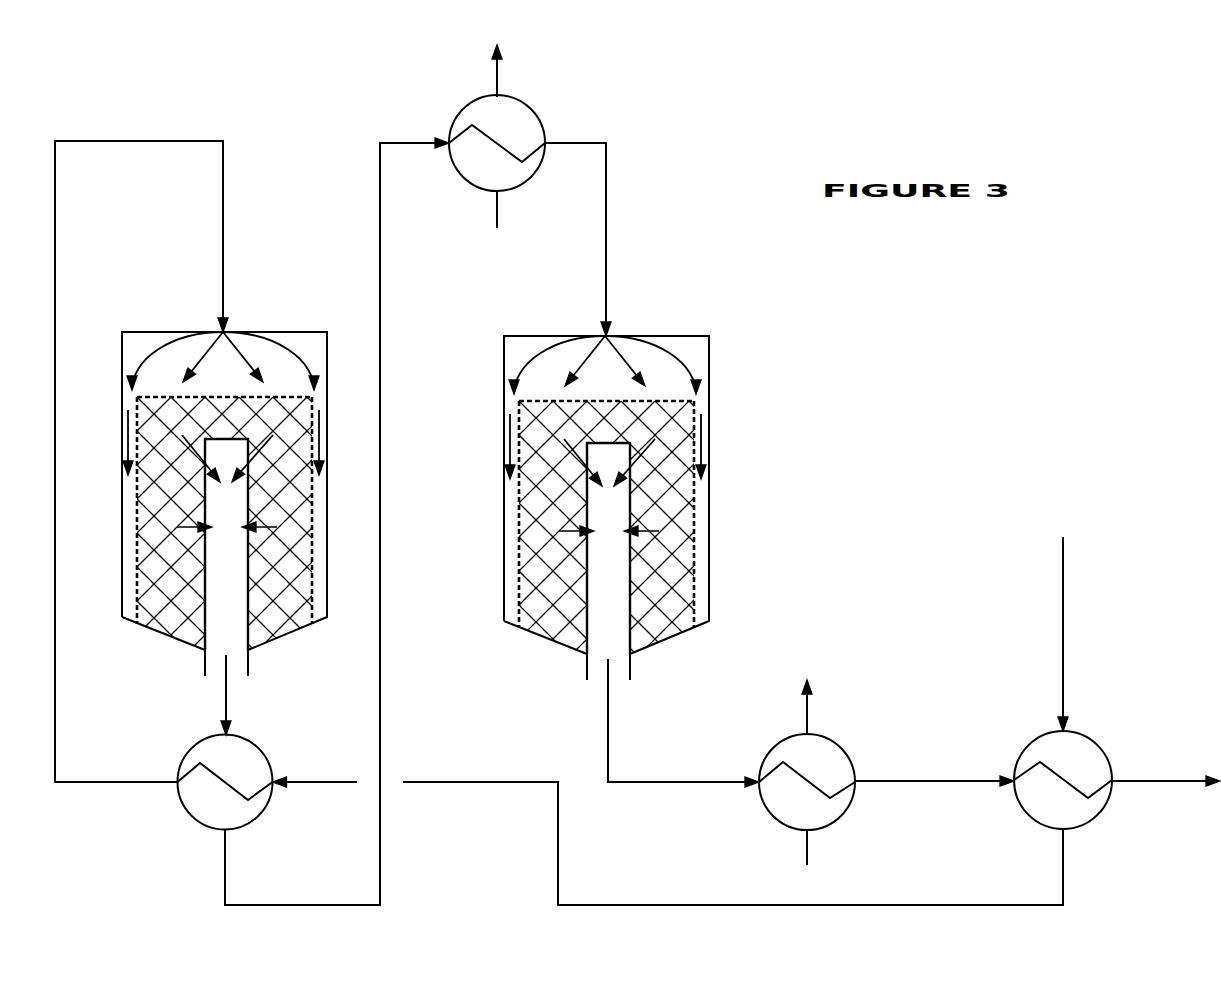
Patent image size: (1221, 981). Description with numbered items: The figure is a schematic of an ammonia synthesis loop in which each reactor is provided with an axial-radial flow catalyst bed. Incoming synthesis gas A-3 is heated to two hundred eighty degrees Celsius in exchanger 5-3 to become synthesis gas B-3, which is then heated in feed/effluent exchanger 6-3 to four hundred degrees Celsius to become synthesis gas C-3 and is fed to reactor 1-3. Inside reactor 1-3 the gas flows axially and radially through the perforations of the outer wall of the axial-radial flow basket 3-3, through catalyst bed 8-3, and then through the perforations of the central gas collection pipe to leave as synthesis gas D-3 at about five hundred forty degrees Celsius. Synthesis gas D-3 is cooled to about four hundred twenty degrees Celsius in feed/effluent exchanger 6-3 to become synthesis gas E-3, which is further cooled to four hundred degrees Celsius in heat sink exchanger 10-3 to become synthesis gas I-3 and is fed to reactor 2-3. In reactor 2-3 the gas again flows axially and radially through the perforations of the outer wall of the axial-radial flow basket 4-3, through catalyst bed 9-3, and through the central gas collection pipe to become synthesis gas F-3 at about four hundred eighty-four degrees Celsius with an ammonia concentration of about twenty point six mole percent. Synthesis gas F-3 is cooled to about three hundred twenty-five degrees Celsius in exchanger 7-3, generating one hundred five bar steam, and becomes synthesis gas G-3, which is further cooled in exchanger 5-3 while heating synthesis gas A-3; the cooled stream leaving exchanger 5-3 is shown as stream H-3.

The reactor 1-3 is at (120, 388).
The reactor 2-3 is at (503, 392).
The axial-radial flow basket 3-3 is at (138, 565).
The axial-radial flow basket 4-3 is at (519, 565).
The exchanger 5-3 is at (1025, 753).
The feed/effluent exchanger 6-3 is at (183, 757).
The exchanger 7-3 is at (765, 755).
The catalyst bed 8-3 is at (165, 500).
The catalyst bed 9-3 is at (546, 500).
The heat sink exchanger 10-3 is at (455, 117).
The synthesis gas A-3 is at (1065, 650).
The synthesis gas B-3 is at (1065, 840).
The synthesis gas C-3 is at (147, 782).
The synthesis gas D-3 is at (227, 683).
The synthesis gas E-3 is at (227, 890).
The synthesis gas F-3 is at (608, 737).
The synthesis gas G-3 is at (968, 781).
The product stream H-3 is at (1148, 781).
The synthesis gas I-3 is at (548, 145).